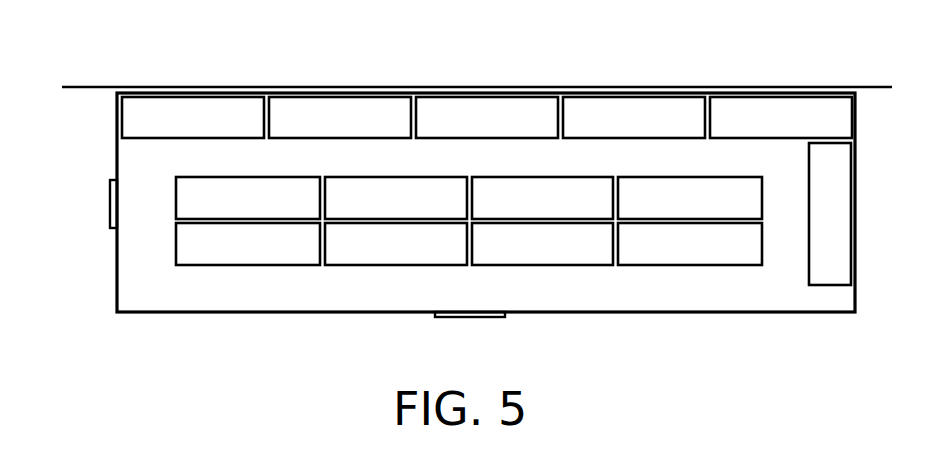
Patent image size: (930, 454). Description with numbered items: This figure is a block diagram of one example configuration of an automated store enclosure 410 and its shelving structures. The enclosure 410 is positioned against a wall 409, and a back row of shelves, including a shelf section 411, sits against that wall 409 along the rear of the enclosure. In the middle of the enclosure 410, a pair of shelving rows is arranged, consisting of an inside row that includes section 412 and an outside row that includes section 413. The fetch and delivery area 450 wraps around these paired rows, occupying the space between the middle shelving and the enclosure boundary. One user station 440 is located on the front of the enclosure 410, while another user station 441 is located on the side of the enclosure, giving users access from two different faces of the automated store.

The wall 409 is at (750, 87).
The enclosure 410 is at (442, 238).
The section 411 is at (511, 131).
The section 412 is at (422, 211).
The section 413 is at (422, 256).
The user station 440 is at (475, 317).
The connector 441 is at (110, 199).
The fetch and delivery area 450 is at (688, 300).